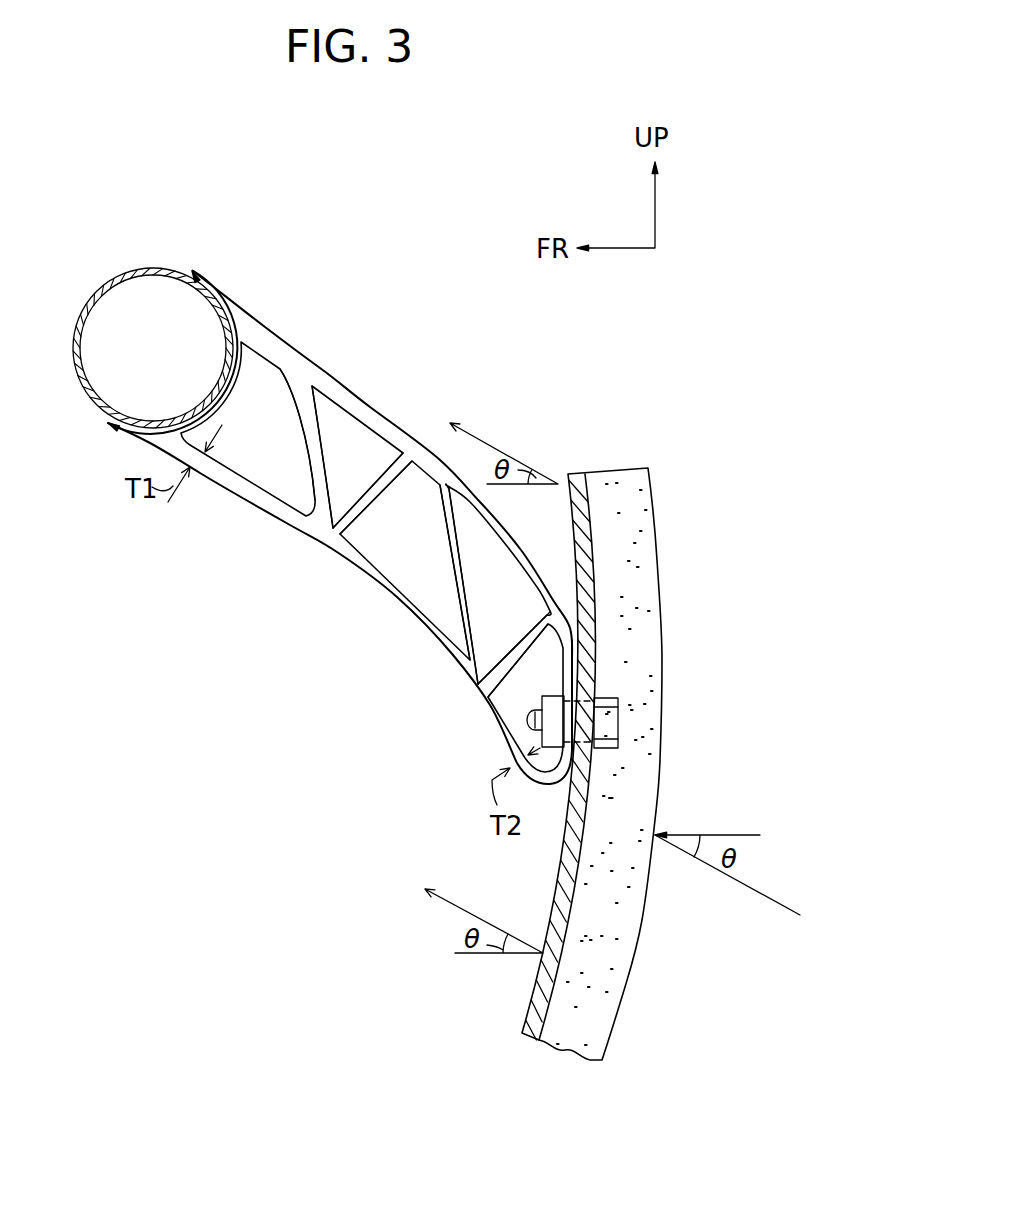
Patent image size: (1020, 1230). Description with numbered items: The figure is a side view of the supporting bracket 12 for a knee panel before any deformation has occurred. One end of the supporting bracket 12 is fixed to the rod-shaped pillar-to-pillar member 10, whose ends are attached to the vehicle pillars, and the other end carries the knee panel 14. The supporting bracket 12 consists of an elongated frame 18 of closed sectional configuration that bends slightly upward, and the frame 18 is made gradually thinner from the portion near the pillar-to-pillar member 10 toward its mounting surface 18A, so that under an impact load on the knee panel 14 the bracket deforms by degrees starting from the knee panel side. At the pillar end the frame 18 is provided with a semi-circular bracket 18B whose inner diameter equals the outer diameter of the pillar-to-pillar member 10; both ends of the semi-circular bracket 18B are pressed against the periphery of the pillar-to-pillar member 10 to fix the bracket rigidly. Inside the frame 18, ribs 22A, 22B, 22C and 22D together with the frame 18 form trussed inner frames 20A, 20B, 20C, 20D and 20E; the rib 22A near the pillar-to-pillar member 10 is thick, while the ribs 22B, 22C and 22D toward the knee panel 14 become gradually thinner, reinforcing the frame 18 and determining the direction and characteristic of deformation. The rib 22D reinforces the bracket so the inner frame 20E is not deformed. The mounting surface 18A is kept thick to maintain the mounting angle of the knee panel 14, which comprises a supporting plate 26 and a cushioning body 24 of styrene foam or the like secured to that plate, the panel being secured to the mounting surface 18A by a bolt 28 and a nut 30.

The pillar-to-pillar member 10 is at (127, 267).
The supporting bracket 12 is at (224, 524).
The knee panel 14 is at (637, 728).
The frame 18 is at (388, 421).
The mounting surface 18A is at (573, 673).
The semi-circular bracket 18B is at (208, 286).
The trussed inner frame 20A is at (259, 398).
The trussed inner frame 20B is at (340, 499).
The trussed inner frame 20C is at (416, 590).
The trussed inner frame 20D is at (487, 642).
The trussed inner frame 20E is at (514, 709).
The rib 22A is at (316, 427).
The rib 22B is at (380, 493).
The rib 22C is at (449, 548).
The rib 22D is at (527, 630).
The cushioning body 24 is at (662, 491).
The supporting plate 26 is at (588, 500).
The bolt 28 is at (618, 723).
The nut 30 is at (555, 696).